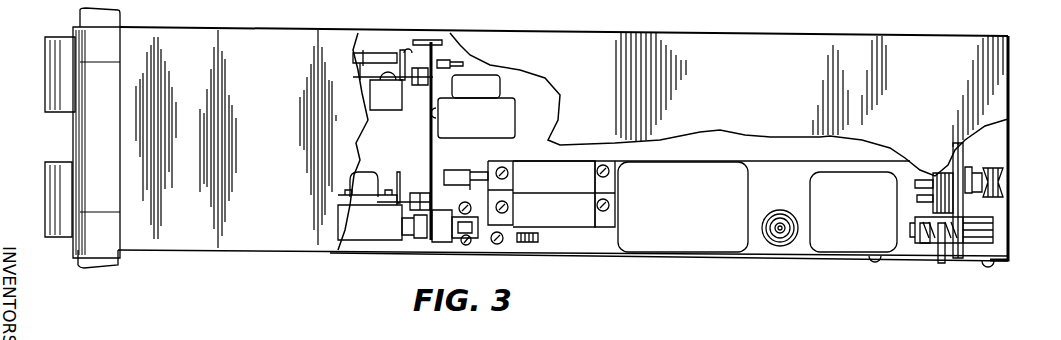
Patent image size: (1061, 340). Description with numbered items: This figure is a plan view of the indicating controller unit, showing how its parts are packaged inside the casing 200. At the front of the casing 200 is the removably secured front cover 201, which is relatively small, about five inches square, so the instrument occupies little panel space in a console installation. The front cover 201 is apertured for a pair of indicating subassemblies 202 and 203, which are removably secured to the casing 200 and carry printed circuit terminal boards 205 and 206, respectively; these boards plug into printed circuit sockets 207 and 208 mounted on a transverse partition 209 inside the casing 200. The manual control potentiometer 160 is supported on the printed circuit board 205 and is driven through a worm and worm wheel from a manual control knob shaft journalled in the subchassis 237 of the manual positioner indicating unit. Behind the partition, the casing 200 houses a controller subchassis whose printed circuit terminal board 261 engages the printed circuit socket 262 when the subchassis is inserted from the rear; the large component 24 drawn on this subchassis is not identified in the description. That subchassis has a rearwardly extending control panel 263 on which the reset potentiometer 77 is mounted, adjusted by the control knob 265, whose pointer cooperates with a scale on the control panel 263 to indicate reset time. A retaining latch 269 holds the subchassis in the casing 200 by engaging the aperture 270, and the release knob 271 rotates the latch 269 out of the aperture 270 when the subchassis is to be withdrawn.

The casing 200 is at (273, 28).
The front cover 201 is at (77, 130).
The indicating subassembly 202 is at (43, 52).
The indicating subassembly 203 is at (58, 160).
The manual control potentiometer 160 is at (362, 165).
The printed circuit terminal board 205 is at (385, 193).
The printed circuit terminal board 206 is at (393, 90).
The printed circuit socket 207 is at (415, 85).
The printed circuit socket 208 is at (413, 192).
The transverse partition 209 is at (434, 165).
The printed circuit terminal board 261 is at (470, 177).
The printed circuit socket 262 is at (463, 201).
The battery housing 24 is at (707, 150).
The reset potentiometer 77 is at (947, 173).
The control panel 263 is at (977, 165).
The control knob 265 is at (1004, 173).
The release knob 271 is at (993, 227).
The retaining latch 269 is at (943, 263).
The aperture 270 is at (943, 262).
The subchassis 237 is at (365, 228).